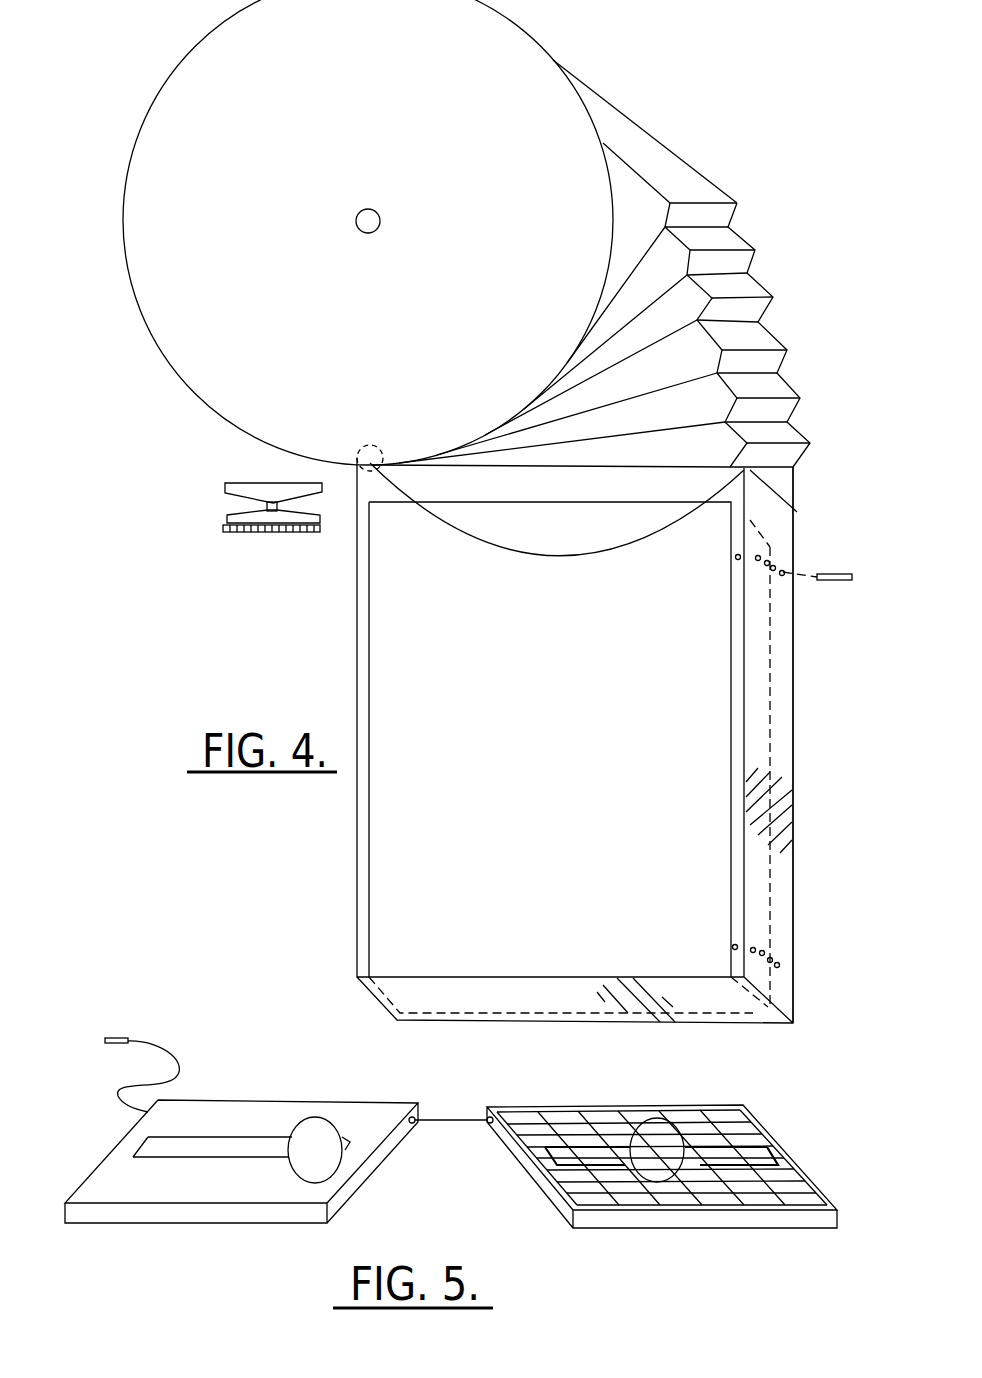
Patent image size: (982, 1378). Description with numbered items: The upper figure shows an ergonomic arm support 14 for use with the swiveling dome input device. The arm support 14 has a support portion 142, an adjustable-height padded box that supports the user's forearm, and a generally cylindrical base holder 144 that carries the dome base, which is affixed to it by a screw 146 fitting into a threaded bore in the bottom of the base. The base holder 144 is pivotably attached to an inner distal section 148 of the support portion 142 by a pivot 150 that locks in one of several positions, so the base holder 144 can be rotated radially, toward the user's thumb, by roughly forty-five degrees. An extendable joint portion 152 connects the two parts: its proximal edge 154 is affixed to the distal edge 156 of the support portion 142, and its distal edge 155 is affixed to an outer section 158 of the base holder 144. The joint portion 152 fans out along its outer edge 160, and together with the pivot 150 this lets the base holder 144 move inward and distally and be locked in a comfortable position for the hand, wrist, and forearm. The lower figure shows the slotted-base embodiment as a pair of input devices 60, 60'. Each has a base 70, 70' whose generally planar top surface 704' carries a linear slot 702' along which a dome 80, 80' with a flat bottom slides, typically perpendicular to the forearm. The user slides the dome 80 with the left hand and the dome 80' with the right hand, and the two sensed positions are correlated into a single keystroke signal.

In FIG. 4, the arm support 14 is at (143, 33).
In FIG. 4, the base holder 144 is at (368, 232).
In FIG. 4, the screw 146 is at (362, 229).
In FIG. 4, the inner distal section 148 is at (357, 467).
In FIG. 4, the pivot 150 is at (356, 456).
In FIG. 4, the extendable joint portion 152 is at (741, 307).
In FIG. 4, the proximal edge 154 is at (782, 494).
In FIG. 4, the distal edge 155 is at (800, 509).
In FIG. 4, the distal edge 156 is at (607, 146).
In FIG. 4, the outer section 158 is at (622, 140).
In FIG. 4, the outer edge 160 is at (801, 396).
In FIG. 4, the support portion 142 is at (695, 815).
In FIG. 5, the input device 60 is at (260, 1121).
In FIG. 5, the base 70 is at (260, 1161).
In FIG. 5, the dome 80 is at (343, 1122).
In FIG. 5, the input device 60' is at (645, 1144).
In FIG. 5, the base 70' is at (668, 1166).
In FIG. 5, the dome 80' is at (657, 1121).
In FIG. 5, the slot 702' is at (645, 1113).
In FIG. 5, the top surface 704' is at (633, 1157).